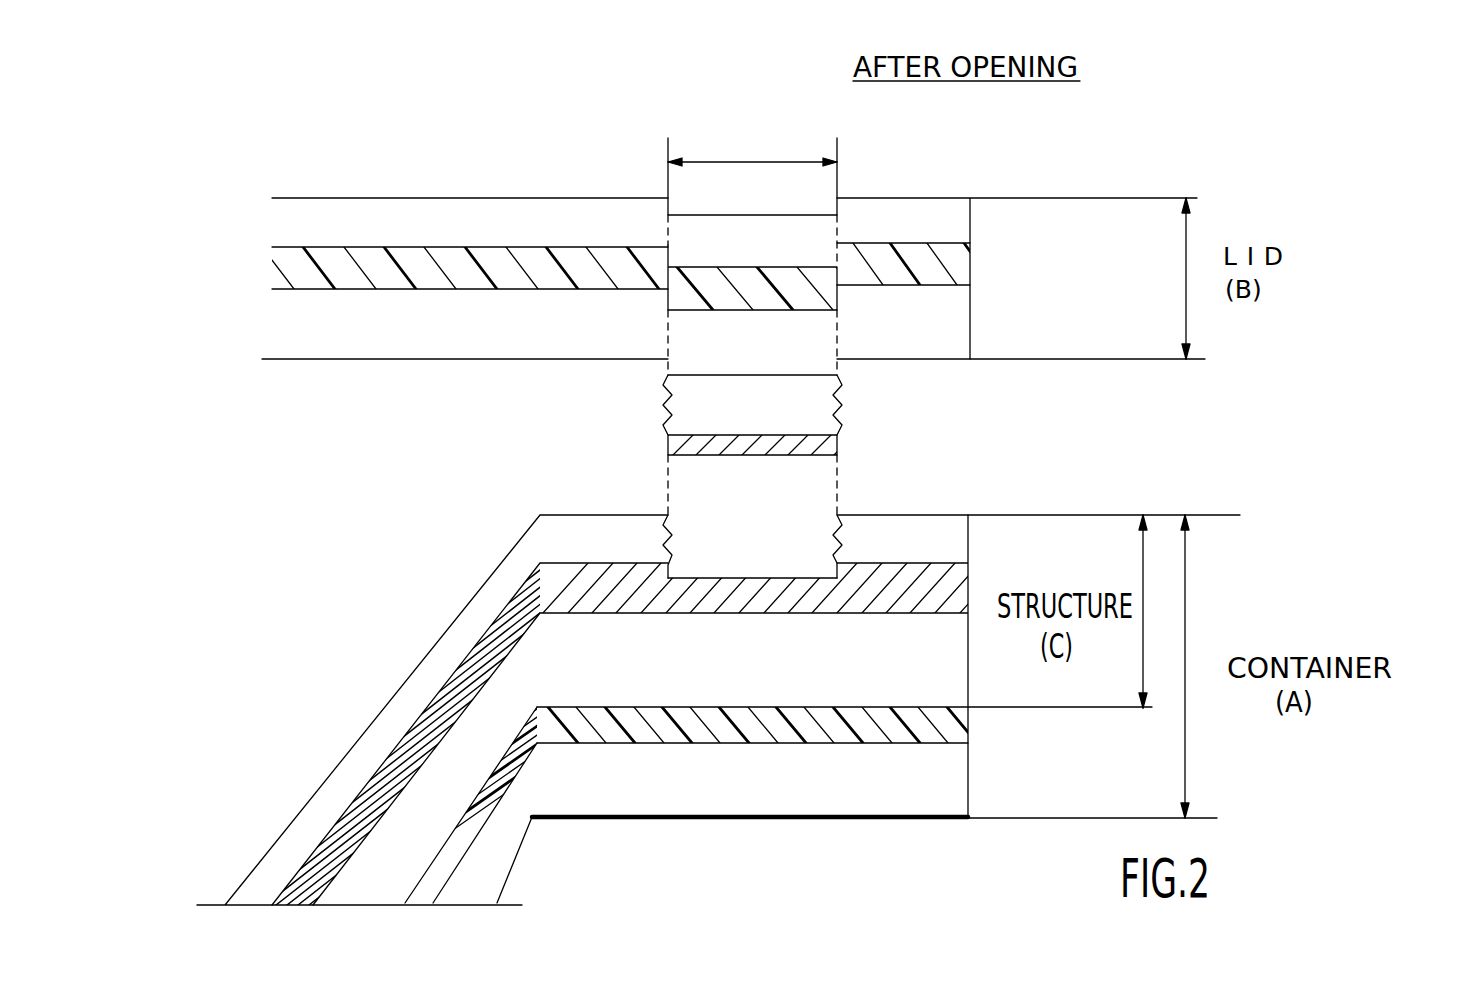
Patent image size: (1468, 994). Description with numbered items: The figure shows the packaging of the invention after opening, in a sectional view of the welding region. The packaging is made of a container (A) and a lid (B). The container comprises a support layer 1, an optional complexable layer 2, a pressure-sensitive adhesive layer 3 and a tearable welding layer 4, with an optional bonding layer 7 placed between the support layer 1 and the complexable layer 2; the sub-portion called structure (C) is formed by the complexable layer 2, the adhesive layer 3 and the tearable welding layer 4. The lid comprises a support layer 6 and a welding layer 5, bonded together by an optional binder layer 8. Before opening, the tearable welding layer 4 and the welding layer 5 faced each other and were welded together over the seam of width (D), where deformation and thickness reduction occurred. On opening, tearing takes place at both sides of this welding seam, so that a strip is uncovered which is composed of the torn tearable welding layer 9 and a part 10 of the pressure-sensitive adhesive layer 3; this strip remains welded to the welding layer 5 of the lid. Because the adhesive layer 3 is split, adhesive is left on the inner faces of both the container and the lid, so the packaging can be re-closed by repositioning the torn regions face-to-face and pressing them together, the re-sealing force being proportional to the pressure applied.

The support layer 1 is at (667, 773).
The complexable layer 2 is at (430, 798).
The pressure-sensitive adhesive layer 3 is at (352, 804).
The tearable welding layer 4 is at (296, 813).
The welding layer 5 is at (483, 333).
The support layer 6 is at (535, 218).
The bonding layer 7 is at (973, 723).
The binder layer 8 is at (973, 265).
The torn tearable welding layer 9 is at (793, 403).
The part of pressure sensitive adhesive layer 10 is at (665, 445).